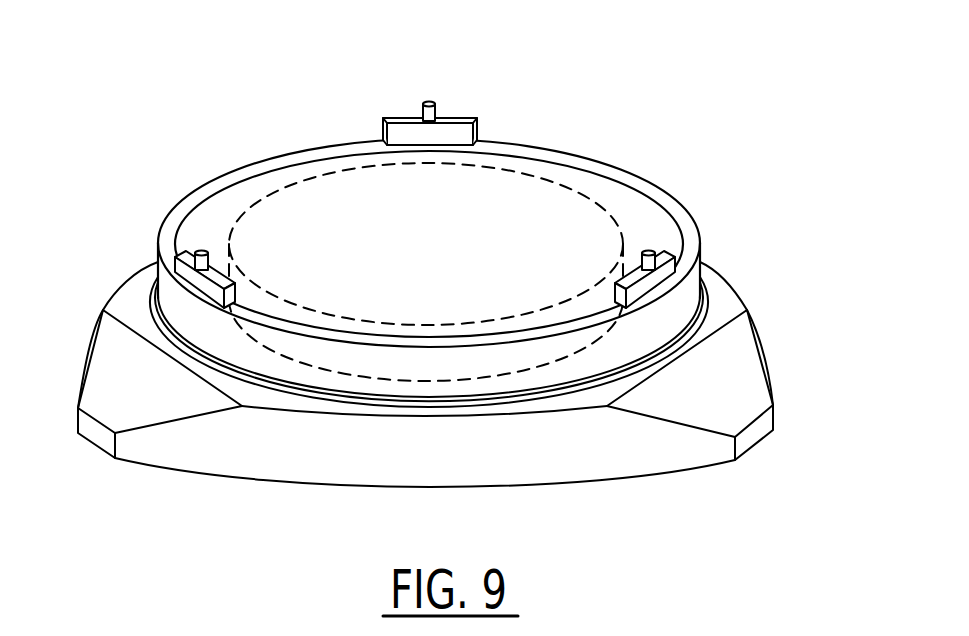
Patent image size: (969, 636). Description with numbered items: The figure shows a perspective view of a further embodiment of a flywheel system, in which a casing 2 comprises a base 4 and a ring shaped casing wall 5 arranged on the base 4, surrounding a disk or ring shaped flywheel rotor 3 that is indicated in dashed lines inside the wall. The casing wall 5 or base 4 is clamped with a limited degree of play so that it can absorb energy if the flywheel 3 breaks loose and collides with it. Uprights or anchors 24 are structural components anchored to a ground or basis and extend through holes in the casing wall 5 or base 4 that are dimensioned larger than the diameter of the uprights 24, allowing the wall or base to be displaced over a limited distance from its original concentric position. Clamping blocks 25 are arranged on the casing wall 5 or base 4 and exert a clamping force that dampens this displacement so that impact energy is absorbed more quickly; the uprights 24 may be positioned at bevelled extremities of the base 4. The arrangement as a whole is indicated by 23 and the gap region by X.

The casing 2 is at (126, 218).
The flywheel rotor 3 is at (329, 257).
The base 4 is at (237, 455).
The casing wall 5 is at (198, 193).
The holder 23 is at (690, 116).
The uprights or anchors 24 is at (432, 98).
The clamping blocks 25 is at (455, 120).
The gap X is at (690, 291).